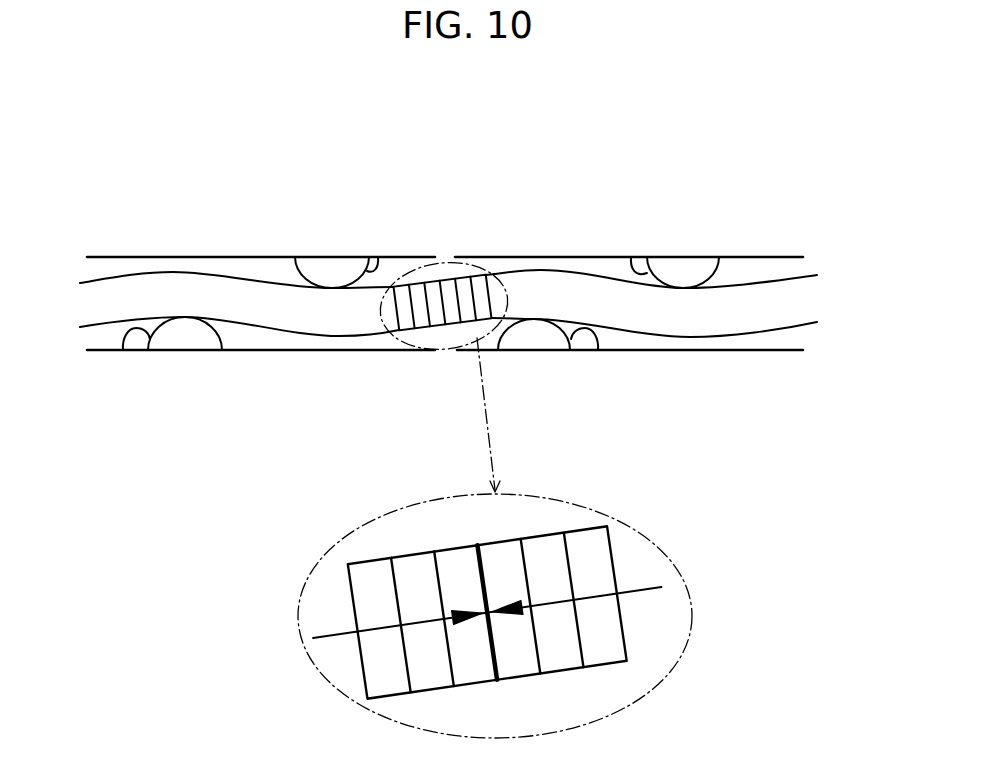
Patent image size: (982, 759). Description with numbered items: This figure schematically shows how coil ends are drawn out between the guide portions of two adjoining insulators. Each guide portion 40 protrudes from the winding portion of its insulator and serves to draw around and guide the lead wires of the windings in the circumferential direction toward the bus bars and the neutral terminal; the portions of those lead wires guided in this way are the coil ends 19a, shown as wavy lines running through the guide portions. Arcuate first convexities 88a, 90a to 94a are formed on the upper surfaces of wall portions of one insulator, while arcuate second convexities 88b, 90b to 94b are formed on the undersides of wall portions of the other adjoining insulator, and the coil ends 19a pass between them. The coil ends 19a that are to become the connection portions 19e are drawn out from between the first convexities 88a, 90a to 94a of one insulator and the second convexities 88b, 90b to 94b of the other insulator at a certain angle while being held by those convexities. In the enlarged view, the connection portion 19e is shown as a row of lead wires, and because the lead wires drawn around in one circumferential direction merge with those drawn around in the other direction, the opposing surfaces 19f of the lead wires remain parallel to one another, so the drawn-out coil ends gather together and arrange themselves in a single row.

The guide portion 40 is at (117, 233).
The coil end 19a is at (245, 278).
The connection portion 19e is at (442, 330).
The opposing surface 19f is at (493, 645).
The first convexity 88a is at (358, 375).
The first convexity 90a is at (358, 375).
The first convexity 94a is at (125, 352).
The second convexity 88b is at (503, 227).
The second convexity 90b is at (503, 227).
The second convexity 94b is at (378, 257).